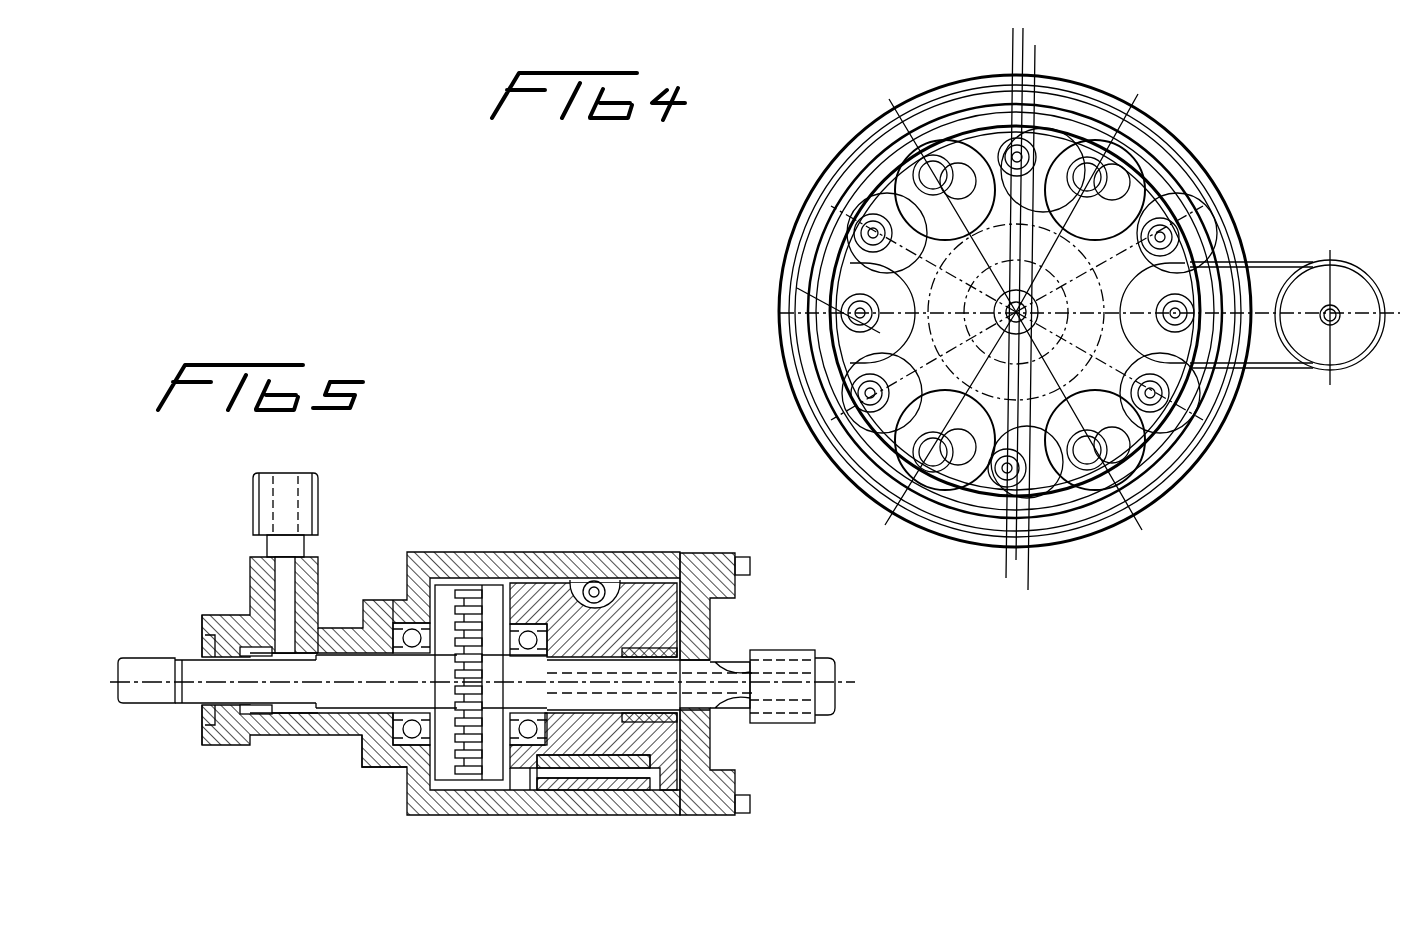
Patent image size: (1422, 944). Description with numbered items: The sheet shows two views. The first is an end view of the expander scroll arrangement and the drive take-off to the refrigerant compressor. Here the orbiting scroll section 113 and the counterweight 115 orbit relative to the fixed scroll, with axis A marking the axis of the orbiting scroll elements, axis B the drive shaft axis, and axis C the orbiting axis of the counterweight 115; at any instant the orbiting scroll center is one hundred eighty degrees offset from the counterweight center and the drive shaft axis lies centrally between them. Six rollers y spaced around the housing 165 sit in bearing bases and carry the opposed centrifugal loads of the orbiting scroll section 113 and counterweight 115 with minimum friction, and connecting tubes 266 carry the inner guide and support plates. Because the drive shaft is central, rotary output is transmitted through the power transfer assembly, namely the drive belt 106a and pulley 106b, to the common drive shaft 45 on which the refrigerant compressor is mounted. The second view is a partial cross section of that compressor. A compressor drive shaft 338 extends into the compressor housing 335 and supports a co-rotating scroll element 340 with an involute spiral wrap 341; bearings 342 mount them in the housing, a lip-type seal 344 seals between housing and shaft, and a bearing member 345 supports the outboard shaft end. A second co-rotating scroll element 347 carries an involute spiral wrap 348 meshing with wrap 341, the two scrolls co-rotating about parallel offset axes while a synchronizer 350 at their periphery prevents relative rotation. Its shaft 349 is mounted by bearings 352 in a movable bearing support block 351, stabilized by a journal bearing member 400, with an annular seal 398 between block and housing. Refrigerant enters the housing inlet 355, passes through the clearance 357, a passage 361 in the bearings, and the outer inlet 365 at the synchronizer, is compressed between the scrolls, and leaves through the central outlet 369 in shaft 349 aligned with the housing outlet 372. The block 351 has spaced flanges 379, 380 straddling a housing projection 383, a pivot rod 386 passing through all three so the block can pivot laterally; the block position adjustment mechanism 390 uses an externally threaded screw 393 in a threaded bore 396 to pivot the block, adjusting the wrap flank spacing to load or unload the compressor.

In FIG. 4, the orbiting scroll section 113 is at (837, 167).
In FIG. 4, the housing 165 is at (1140, 120).
In FIG. 4, the connecting tubes 266 is at (1238, 186).
In FIG. 4, the drive belt 106a is at (1292, 258).
In FIG. 4, the common drive shaft 45 is at (1345, 307).
In FIG. 4, the pulley 106b is at (1347, 350).
In FIG. 4, the counterweight 115 is at (1105, 475).
In FIG. 4, the rollers y is at (830, 333).
In FIG. 4, the axis of the orbiting scroll elements A is at (1007, 53).
In FIG. 4, the drive shaft axis B is at (1023, 27).
In FIG. 4, the orbiting axis of counterweight C is at (1037, 50).
In FIG. 5, the compressor housing 335 is at (716, 617).
In FIG. 5, the compressor drive shaft 338 is at (282, 733).
In FIG. 5, the co-rotating scroll element 340 is at (431, 681).
In FIG. 5, the involute spiral wrap 341 is at (405, 805).
In FIG. 5, the bearings 342 is at (416, 713).
In FIG. 5, the lip-type seal 344 is at (204, 657).
In FIG. 5, the bearing member 345 is at (257, 735).
In FIG. 5, the second co-rotating scroll element 347 is at (470, 772).
In FIG. 5, the involute spiral wrap 348 is at (440, 612).
In FIG. 5, the shaft 349 is at (651, 683).
In FIG. 5, the synchronizer 350 is at (410, 567).
In FIG. 5, the movable bearing support block 351 is at (662, 598).
In FIG. 5, the bearings 352 is at (514, 712).
In FIG. 5, the housing inlet 355 is at (282, 498).
In FIG. 5, the clearance 357 is at (352, 652).
In FIG. 5, the passage 361 is at (385, 760).
In FIG. 5, the outer inlet 365 is at (462, 583).
In FIG. 5, the central outlet 369 is at (690, 684).
In FIG. 5, the housing outlet 372 is at (836, 690).
In FIG. 5, the flange 379 is at (516, 786).
In FIG. 5, the flange 380 is at (676, 806).
In FIG. 5, the projection 383 is at (585, 780).
In FIG. 5, the pivot rod 386 is at (612, 770).
In FIG. 5, the block position adjustment mechanism 390 is at (560, 580).
In FIG. 5, the externally threaded screw 393 is at (596, 584).
In FIG. 5, the threaded bore 396 is at (608, 594).
In FIG. 5, the annular seal 398 is at (712, 648).
In FIG. 5, the journal bearing member 400 is at (682, 723).